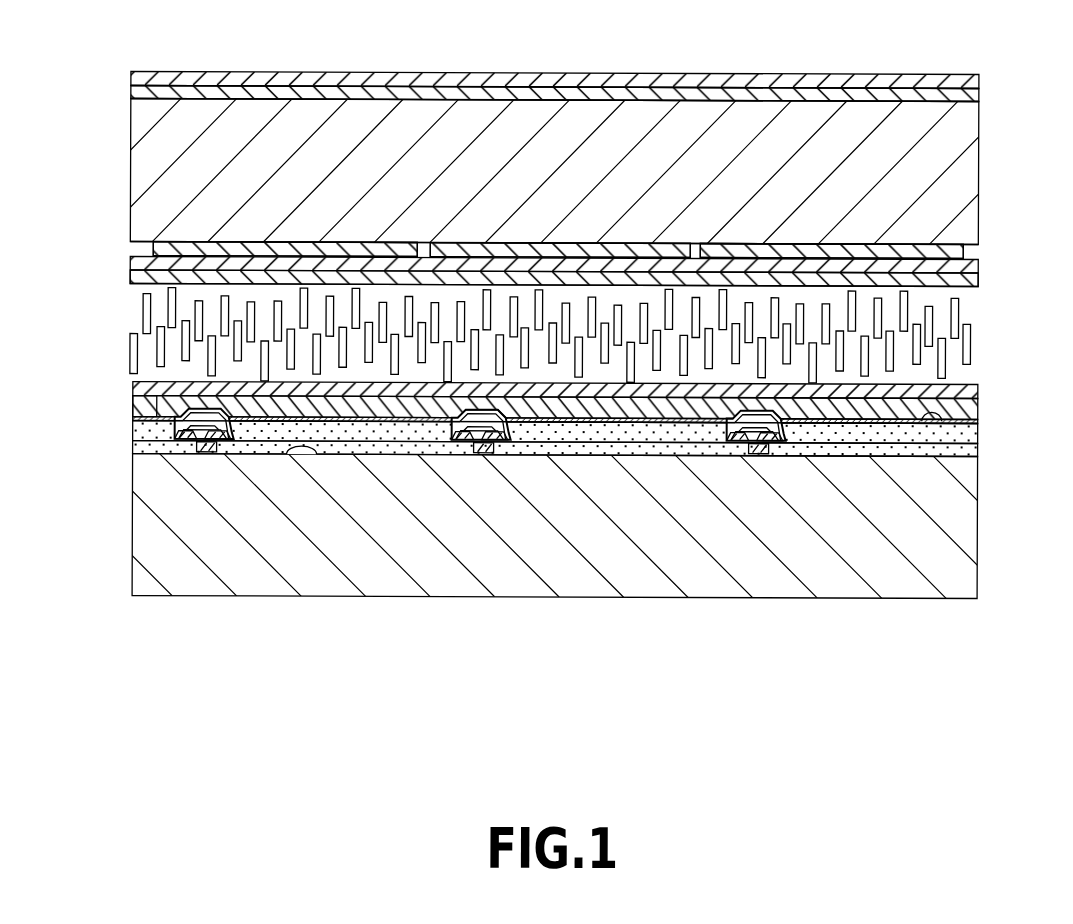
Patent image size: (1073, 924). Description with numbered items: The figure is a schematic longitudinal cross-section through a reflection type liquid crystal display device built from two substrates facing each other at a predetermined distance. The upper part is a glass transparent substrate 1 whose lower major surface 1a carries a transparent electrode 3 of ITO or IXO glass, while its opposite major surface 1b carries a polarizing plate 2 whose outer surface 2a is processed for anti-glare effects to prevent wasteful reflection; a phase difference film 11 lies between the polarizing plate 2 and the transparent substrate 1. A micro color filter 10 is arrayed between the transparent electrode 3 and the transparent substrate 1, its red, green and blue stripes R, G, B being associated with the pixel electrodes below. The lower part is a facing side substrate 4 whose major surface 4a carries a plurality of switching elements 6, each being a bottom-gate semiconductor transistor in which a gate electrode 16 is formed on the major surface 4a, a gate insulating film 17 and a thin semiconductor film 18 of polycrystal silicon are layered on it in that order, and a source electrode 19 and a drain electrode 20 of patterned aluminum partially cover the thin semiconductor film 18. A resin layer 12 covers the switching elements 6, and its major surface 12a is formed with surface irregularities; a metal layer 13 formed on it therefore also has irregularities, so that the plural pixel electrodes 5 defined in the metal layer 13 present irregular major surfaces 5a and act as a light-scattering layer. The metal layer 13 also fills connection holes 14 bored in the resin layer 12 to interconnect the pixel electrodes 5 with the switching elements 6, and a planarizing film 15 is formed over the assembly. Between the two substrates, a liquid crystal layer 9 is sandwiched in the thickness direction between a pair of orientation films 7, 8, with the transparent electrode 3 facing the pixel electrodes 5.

The transparent substrate 1 is at (963, 175).
The major surface of transparent substrate 1a is at (135, 244).
The opposite major surface of transparent substrate 1b is at (700, 100).
The polarizing plate 2 is at (435, 73).
The surface of polarizing plate 2a is at (565, 87).
The transparent electrode 3 is at (130, 262).
The facing side substrate 4 is at (240, 573).
The major surface of facing side substrate 4a is at (318, 457).
The pixel electrodes 5 is at (675, 445).
The major surfaces of pixel electrodes 5a is at (483, 408).
The switching elements 6 is at (206, 458).
The orientation film 7 is at (978, 281).
The orientation film 8 is at (980, 385).
The liquid crystal layer 9 is at (980, 331).
The micro color filter 10 is at (965, 250).
The phase difference film 11 is at (130, 93).
The resin layer 12 is at (980, 442).
The major surface of resin layer 12a is at (948, 425).
The metal layer 13 is at (980, 411).
The connection holes 14 is at (786, 427).
The planarizing film 15 is at (135, 412).
The gate electrode 16 is at (477, 453).
The gate insulating film 17 is at (502, 442).
The thin semiconductor film 18 is at (468, 442).
The source electrode 19 is at (455, 440).
The drain electrode 20 is at (512, 425).
The red stripe of micro color filter R is at (268, 250).
The green stripe of micro color filter G is at (548, 250).
The blue stripe of micro color filter B is at (820, 250).